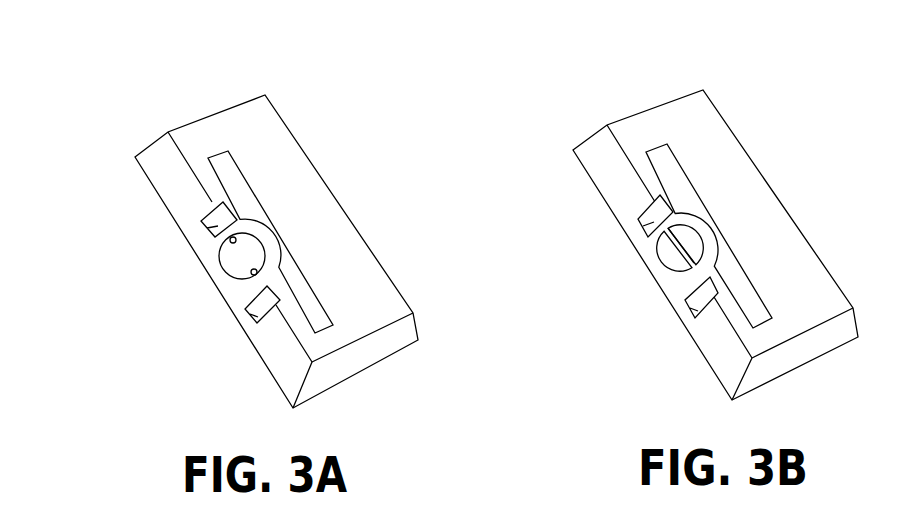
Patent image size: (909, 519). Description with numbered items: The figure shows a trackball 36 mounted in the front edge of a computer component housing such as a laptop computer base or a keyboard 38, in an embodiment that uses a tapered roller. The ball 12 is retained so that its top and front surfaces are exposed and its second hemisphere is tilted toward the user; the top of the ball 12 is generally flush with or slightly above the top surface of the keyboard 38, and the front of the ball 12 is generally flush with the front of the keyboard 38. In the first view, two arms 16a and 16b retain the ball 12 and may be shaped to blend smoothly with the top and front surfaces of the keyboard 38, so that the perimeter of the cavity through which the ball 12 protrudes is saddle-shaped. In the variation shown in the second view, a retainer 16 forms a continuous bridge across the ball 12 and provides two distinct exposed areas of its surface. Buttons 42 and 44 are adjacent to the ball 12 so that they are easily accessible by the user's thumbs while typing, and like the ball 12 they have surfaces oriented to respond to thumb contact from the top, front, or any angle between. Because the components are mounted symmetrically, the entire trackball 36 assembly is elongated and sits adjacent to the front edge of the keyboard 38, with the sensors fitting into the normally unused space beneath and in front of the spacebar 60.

In FIG. 3A, the trackball 36 is at (103, 109).
In FIG. 3B, the trackball 36 is at (526, 96).
In FIG. 3A, the keyboard 38 is at (263, 118).
In FIG. 3B, the keyboard 38 is at (702, 113).
In FIG. 3A, the spacebar 60 is at (320, 321).
In FIG. 3B, the spacebar 60 is at (758, 315).
In FIG. 3B, the retainer 16 is at (674, 240).
In FIG. 3A, the arm 16a is at (253, 273).
In FIG. 3A, the arm 16b is at (231, 243).
In FIG. 3B, the ball 12 is at (688, 258).
In FIG. 3A, the button 42 is at (213, 229).
In FIG. 3B, the button 42 is at (650, 223).
In FIG. 3A, the button 44 is at (256, 311).
In FIG. 3B, the button 44 is at (690, 305).